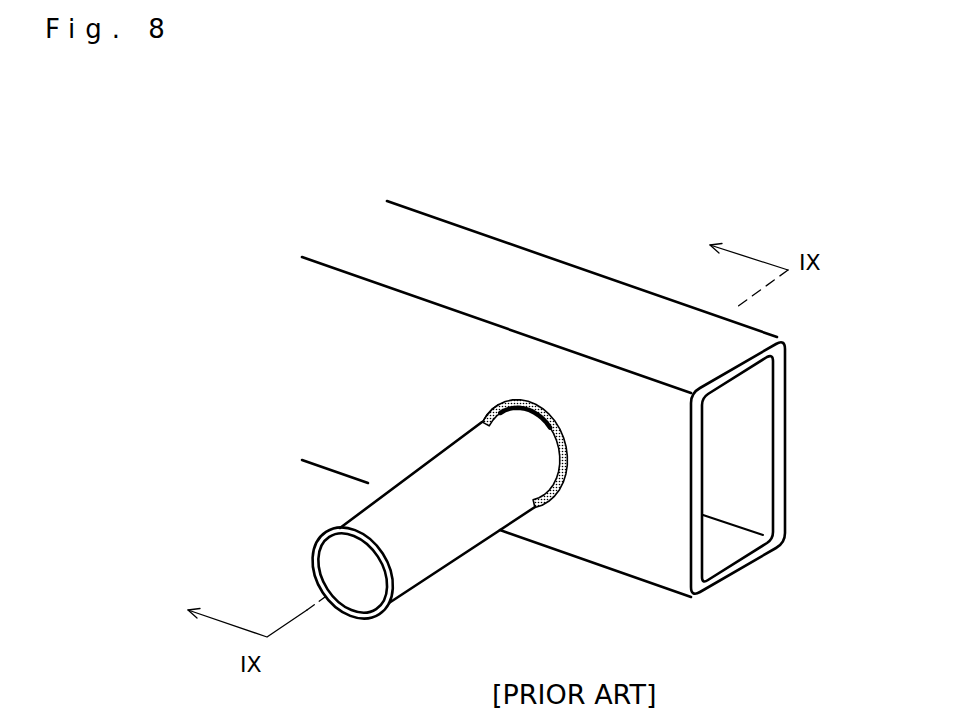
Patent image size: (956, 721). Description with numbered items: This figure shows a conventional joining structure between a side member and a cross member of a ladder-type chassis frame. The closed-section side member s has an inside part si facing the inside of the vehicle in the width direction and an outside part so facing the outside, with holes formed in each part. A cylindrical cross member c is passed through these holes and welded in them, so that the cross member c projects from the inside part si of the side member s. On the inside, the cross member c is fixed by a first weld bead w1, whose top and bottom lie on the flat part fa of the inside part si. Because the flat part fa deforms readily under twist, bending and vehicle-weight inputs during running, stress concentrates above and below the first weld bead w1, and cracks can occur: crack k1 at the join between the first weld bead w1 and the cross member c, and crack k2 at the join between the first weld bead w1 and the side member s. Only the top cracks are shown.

The side member s is at (488, 266).
The outside part so is at (780, 498).
The inside part si is at (700, 552).
The flat part fa is at (533, 373).
The cross member c is at (330, 511).
The crack k2 is at (553, 420).
The crack k1 is at (513, 413).
The first weld bead w1 is at (482, 418).